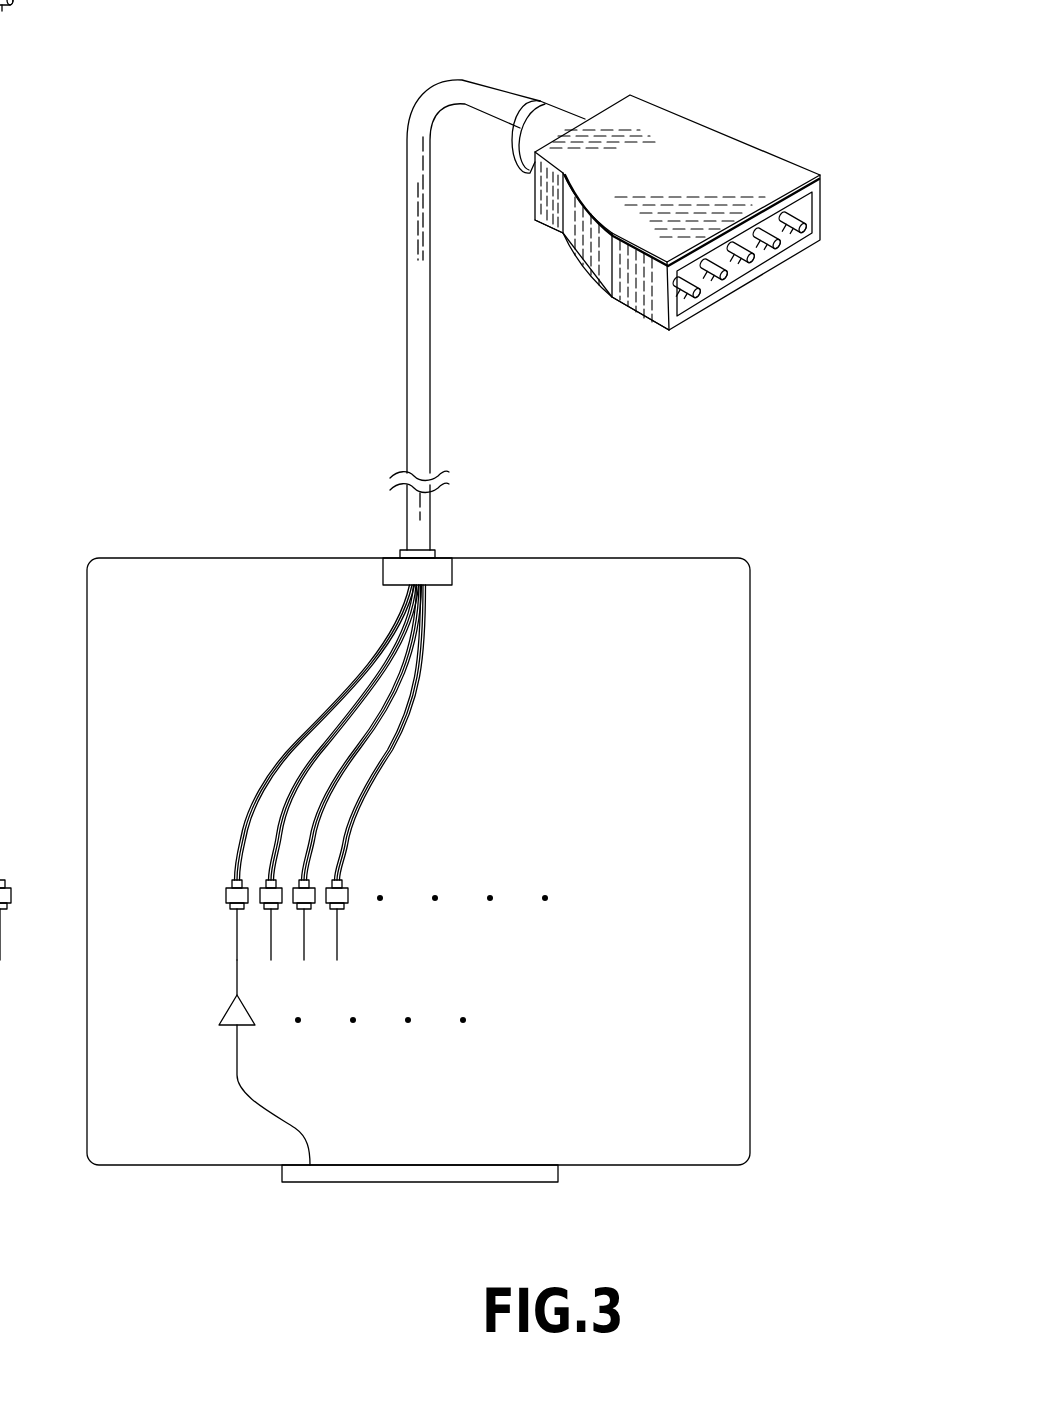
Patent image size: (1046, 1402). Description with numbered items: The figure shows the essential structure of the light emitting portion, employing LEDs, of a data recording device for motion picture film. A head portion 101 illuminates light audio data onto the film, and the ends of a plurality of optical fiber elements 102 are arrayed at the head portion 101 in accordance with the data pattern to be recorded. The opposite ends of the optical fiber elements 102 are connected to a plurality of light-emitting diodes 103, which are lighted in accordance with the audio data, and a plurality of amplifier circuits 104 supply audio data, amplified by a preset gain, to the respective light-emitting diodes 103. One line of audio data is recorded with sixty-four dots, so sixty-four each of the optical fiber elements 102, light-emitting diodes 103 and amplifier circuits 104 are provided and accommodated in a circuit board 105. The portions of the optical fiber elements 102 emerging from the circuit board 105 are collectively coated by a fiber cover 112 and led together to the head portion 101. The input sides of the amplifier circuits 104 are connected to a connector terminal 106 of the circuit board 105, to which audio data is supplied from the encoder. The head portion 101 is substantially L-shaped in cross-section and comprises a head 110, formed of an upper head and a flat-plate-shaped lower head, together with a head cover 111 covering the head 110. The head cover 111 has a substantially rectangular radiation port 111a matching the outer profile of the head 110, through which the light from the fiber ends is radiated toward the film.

The head portion 101 is at (606, 275).
The optical fiber elements 102 is at (687, 296).
The light-emitting diodes 103 is at (226, 899).
The amplifier circuits 104 is at (240, 1017).
The circuit board 105 is at (533, 558).
The connector terminal 106 is at (483, 1165).
The head 110 is at (802, 207).
The head cover 111 is at (683, 128).
The radiation port 111a is at (731, 266).
The fiber cover 112 is at (412, 360).